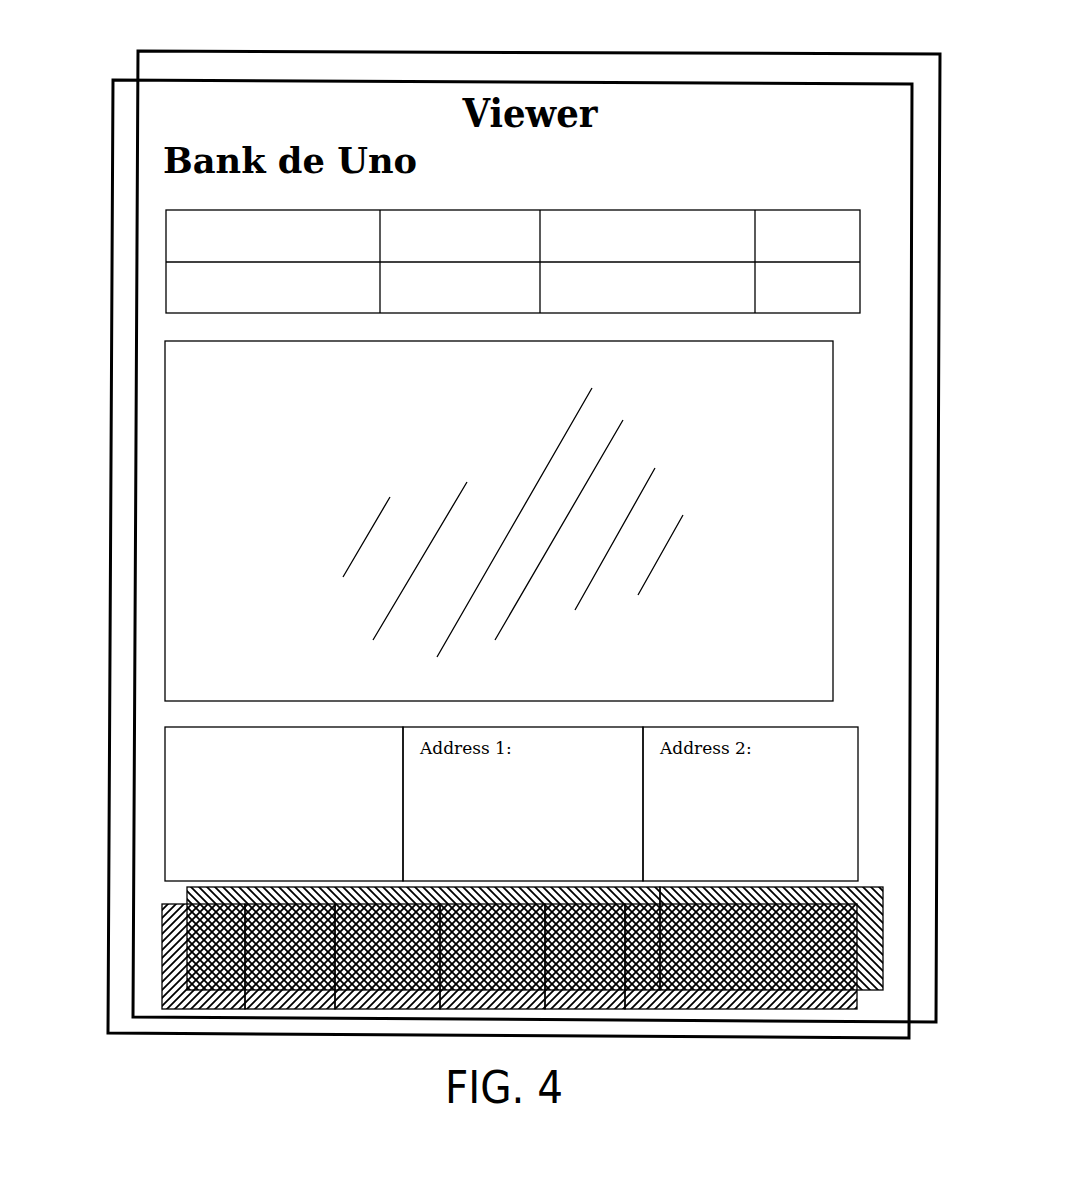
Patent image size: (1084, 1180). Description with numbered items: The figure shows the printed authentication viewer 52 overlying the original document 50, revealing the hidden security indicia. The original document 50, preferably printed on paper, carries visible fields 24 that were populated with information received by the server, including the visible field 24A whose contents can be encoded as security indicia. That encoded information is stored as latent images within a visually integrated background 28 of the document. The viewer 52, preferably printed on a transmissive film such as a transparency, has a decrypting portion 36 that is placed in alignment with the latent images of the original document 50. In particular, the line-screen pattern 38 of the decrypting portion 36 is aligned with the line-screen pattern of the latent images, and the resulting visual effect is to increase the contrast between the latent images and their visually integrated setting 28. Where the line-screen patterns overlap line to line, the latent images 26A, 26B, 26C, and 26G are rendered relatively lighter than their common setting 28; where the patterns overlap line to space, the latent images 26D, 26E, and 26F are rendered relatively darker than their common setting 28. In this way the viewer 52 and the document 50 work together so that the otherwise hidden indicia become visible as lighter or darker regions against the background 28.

The original document 50 is at (112, 158).
The authentication viewer 52 is at (683, 53).
The fields 24 is at (310, 314).
The visible field 24A is at (237, 727).
The decrypting portion 36 is at (263, 880).
The visually integrated background 28 is at (452, 970).
The line-screen pattern 38 is at (542, 968).
The latent image 26A is at (200, 1012).
The latent image 26B is at (290, 1012).
The latent image 26C is at (380, 1012).
The latent image 26D is at (500, 886).
The latent image 26E is at (590, 884).
The latent image 26F is at (655, 886).
The latent image 26G is at (702, 1012).